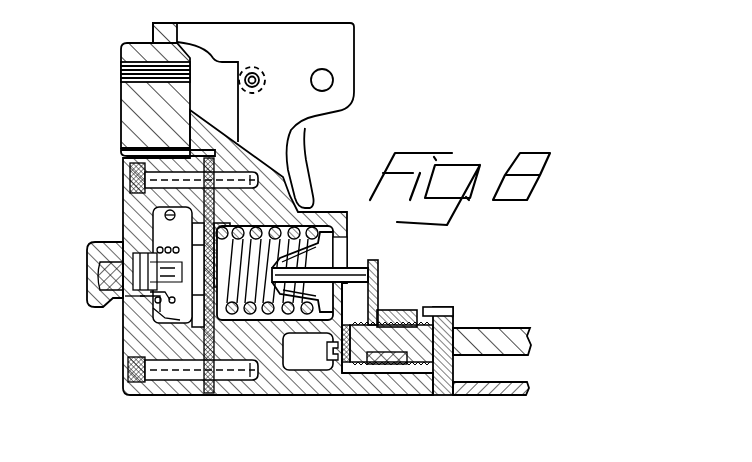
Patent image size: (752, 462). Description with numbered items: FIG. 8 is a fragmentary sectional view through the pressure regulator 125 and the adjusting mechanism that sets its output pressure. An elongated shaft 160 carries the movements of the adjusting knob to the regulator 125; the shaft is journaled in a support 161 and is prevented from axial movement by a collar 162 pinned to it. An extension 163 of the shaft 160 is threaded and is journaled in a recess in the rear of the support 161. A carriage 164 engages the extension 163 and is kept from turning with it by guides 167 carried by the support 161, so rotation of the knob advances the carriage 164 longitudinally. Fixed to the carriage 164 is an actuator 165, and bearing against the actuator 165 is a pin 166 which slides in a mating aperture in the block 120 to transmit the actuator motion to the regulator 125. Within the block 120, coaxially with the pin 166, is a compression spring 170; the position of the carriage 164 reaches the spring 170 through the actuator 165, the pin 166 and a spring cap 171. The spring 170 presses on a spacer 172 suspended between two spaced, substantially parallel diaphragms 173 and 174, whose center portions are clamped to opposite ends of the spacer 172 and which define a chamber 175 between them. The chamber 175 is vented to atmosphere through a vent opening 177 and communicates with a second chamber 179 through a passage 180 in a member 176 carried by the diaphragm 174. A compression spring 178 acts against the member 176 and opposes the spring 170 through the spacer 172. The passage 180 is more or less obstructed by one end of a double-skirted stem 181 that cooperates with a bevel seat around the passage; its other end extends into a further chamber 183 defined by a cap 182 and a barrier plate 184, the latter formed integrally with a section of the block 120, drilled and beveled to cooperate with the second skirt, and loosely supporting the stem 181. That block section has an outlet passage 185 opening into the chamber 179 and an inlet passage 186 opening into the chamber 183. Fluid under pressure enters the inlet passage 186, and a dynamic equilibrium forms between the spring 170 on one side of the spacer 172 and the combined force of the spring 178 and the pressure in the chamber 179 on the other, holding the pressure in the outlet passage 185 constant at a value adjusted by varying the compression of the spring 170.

The block 120 is at (127, 92).
The pressure regulator 125 is at (101, 359).
The elongated shaft 160 is at (517, 335).
The support 161 is at (455, 318).
The collar 162 is at (412, 380).
The extension 163 is at (357, 370).
The carriage 164 is at (400, 318).
The actuator 165 is at (380, 271).
The pin 166 is at (352, 322).
The guides 167 is at (450, 308).
The compression spring 170 is at (340, 229).
The spring cap 171 is at (355, 270).
The spacer 172 is at (318, 200).
The diaphragm 173 is at (215, 340).
The diaphragm 174 is at (178, 350).
The chamber 175 is at (213, 362).
The member 176 is at (158, 247).
The vent opening 177 is at (200, 365).
The compression spring 178 is at (140, 300).
The second chamber 179 is at (150, 335).
The passage 180 is at (140, 318).
The stem 181 is at (140, 258).
The cap 182 is at (90, 244).
The chamber 183 is at (110, 274).
The barrier plate 184 is at (125, 296).
The outlet passage 185 is at (150, 215).
The inlet passage 186 is at (105, 252).